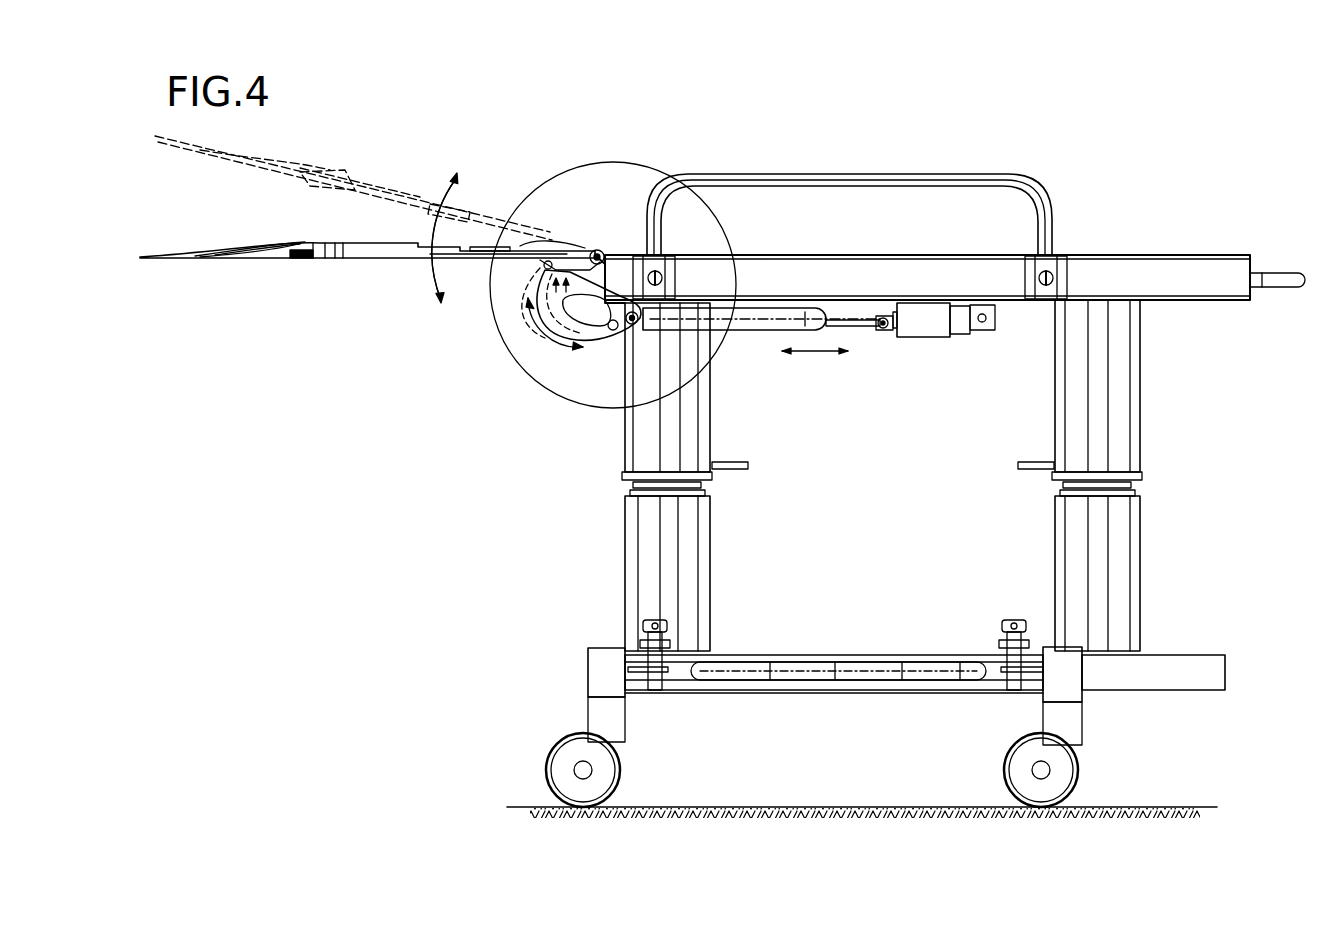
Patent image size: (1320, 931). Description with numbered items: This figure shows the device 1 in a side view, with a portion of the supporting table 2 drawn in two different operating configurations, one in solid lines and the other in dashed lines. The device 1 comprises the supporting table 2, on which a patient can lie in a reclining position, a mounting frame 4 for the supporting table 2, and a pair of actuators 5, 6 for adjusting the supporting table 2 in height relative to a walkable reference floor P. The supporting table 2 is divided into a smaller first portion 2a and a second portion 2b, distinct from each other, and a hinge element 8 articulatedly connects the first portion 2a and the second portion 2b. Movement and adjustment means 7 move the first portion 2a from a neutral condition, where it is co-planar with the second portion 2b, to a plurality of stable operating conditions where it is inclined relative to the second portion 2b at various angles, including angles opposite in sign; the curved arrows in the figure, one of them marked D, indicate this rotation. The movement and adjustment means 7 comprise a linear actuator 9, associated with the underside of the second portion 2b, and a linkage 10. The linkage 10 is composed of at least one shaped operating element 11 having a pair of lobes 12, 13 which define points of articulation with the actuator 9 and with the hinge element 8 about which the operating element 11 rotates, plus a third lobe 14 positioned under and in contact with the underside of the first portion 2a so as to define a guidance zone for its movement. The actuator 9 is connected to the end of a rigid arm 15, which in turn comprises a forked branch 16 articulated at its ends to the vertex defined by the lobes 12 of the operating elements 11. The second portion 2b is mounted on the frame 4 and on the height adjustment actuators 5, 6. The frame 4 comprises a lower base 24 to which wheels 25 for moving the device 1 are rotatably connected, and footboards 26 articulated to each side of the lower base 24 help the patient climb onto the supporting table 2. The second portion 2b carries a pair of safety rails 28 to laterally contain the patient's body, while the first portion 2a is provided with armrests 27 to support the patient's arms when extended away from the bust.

The device 1 is at (779, 126).
The supporting table 2 is at (550, 193).
The first portion 2a is at (348, 253).
The second portion 2b is at (1003, 263).
The mounting frame 4 is at (821, 648).
The actuator 5 is at (643, 445).
The actuator 6 is at (1117, 443).
The movement and adjustment means 7 is at (547, 359).
The hinge element 8 is at (588, 262).
The actuator 9 is at (922, 316).
The linkage 10 is at (603, 350).
The operating element 11 is at (563, 317).
The lobe 12 is at (603, 269).
The lobe 13 is at (605, 268).
The third lobe 14 is at (528, 250).
The rigid arm 15 is at (837, 323).
The forked branch 16 is at (763, 322).
The lower base 24 is at (740, 668).
The wheels 25 is at (560, 770).
The footboards 26 is at (907, 673).
The armrests 27 is at (457, 248).
The safety rails 28 is at (865, 180).
The direction of rotation D is at (517, 213).
The walkable reference floor P is at (517, 807).